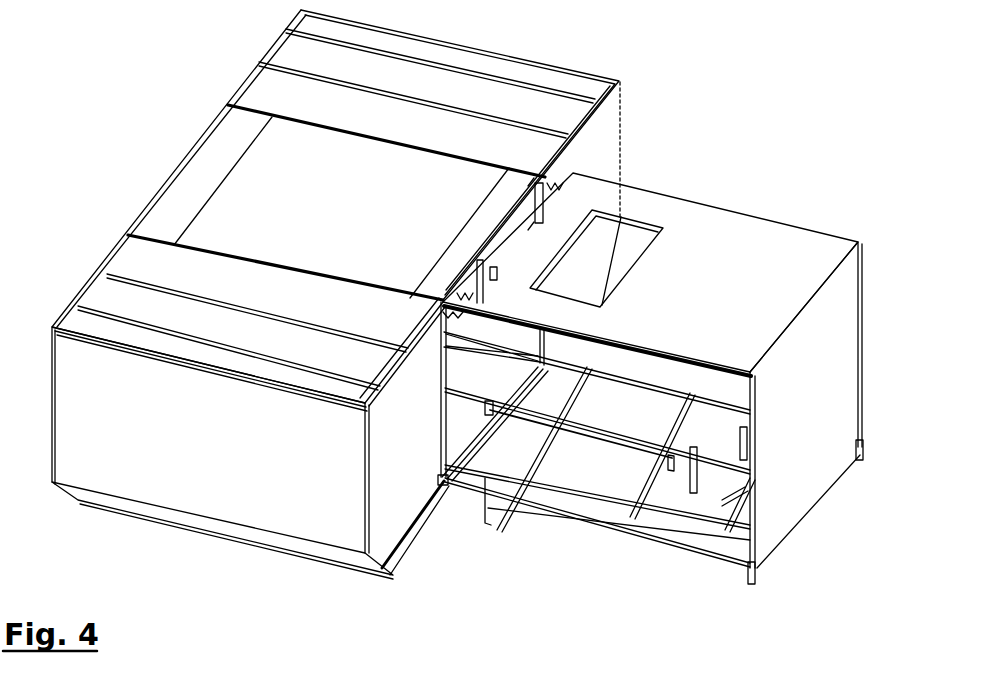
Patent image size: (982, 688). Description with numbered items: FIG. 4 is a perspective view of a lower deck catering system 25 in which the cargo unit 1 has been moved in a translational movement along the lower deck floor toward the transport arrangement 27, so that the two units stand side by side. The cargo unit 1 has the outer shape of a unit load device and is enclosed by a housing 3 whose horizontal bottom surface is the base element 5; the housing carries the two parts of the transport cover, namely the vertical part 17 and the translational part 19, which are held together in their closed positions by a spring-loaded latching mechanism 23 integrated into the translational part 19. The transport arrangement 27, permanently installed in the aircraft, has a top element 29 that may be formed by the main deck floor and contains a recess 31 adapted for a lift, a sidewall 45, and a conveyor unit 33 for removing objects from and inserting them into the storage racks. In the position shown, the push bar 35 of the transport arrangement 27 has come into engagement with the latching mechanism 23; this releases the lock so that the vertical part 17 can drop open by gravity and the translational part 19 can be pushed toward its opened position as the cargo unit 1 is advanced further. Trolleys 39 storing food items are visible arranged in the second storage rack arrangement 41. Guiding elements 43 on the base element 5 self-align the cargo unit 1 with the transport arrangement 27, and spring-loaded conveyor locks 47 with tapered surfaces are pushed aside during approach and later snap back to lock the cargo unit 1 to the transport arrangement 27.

The cargo unit 1 is at (342, 334).
The housing 3 is at (232, 427).
The base element 5 is at (596, 468).
The vertical part of the transport cover 17 is at (490, 417).
The translational part of the transport cover 19 is at (322, 236).
The latching mechanism 23 is at (487, 213).
The lower deck catering system 25 is at (338, 613).
The transport arrangement 27 is at (622, 352).
The top element of the transport arrangement 29 is at (650, 229).
The recess 31 is at (574, 282).
The conveyor unit 33 is at (740, 527).
The push bar 35 is at (513, 238).
The trolleys 39 is at (513, 239).
The second storage rack arrangement 41 is at (513, 333).
The guiding elements 43 is at (485, 415).
The sidewall 45 is at (784, 422).
The conveyor locks 47 is at (443, 483).